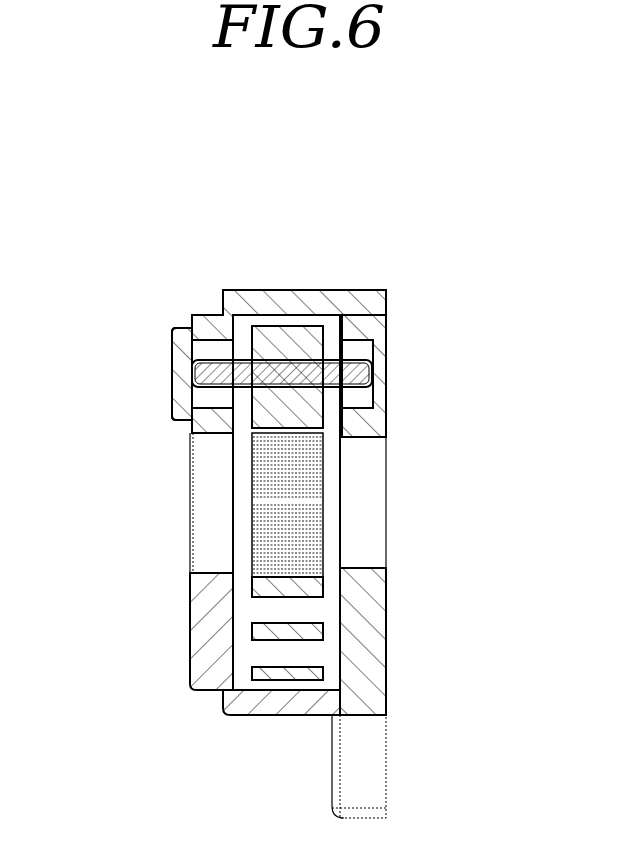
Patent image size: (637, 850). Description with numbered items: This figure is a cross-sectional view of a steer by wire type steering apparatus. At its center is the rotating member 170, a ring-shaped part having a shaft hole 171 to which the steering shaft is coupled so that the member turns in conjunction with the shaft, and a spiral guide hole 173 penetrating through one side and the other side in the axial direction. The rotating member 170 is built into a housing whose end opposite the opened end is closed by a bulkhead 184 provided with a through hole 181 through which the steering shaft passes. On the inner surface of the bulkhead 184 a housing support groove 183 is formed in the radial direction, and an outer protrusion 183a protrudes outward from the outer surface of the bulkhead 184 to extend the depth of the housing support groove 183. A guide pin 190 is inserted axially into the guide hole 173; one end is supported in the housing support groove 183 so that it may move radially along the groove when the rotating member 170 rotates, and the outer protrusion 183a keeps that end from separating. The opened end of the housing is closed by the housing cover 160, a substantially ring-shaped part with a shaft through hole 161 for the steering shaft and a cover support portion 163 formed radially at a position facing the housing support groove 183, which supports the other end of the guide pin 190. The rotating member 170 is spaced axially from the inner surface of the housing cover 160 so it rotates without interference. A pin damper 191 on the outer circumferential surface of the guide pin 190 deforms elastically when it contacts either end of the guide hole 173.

The housing cover 160 is at (373, 636).
The shaft through hole 161 is at (364, 568).
The cover support portion 163 is at (373, 403).
The rotating member 170 is at (285, 337).
The shaft hole 171 is at (323, 500).
The spiral guide hole 173 is at (297, 668).
The through hole 181 is at (210, 437).
The housing support groove 183 is at (213, 347).
The outer protrusion 183a is at (183, 375).
The bulkhead 184 is at (210, 630).
The guide pin 190 is at (373, 371).
The pin damper 191 is at (363, 348).